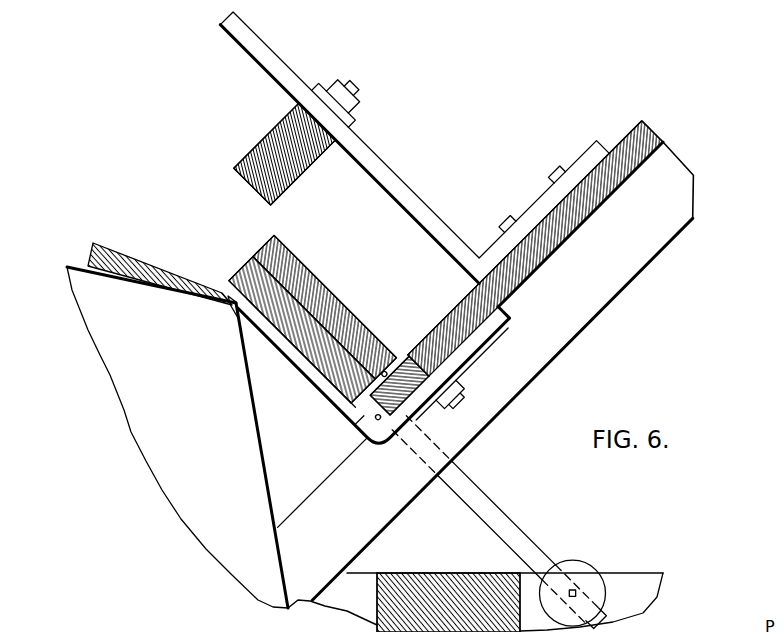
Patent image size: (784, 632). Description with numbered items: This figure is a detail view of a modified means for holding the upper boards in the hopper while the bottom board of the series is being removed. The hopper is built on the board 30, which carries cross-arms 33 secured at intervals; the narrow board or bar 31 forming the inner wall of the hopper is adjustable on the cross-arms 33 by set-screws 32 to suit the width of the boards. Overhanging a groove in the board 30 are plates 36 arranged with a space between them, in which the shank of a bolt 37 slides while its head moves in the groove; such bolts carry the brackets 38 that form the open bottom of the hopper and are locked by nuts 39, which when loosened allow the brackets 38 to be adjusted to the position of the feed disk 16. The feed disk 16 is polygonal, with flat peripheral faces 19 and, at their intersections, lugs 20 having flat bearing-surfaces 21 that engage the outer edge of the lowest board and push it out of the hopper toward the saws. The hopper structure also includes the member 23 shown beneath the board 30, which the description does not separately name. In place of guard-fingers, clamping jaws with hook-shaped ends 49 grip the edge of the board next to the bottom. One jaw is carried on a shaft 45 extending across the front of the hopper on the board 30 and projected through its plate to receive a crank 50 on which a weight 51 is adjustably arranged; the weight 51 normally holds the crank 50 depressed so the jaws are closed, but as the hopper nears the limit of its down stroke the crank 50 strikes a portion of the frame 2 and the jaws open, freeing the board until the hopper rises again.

The frame 2 is at (423, 577).
The feed disk 16 is at (177, 437).
The flat peripheral face 19 is at (259, 428).
The lug 20 is at (227, 313).
The flat bearing-surface 21 is at (217, 317).
The plate 23 is at (593, 300).
The board 30 is at (563, 233).
The board or bar 31 is at (260, 145).
The set-screw 32 is at (342, 92).
The cross-arm 33 is at (370, 158).
The plate 36 is at (463, 368).
The bolt 37 is at (420, 347).
The bracket 38 is at (330, 383).
The nut 39 is at (458, 393).
The shaft 45 is at (366, 430).
The hook-shaped end 49 is at (387, 377).
The crank 50 is at (485, 497).
The weight 51 is at (577, 563).